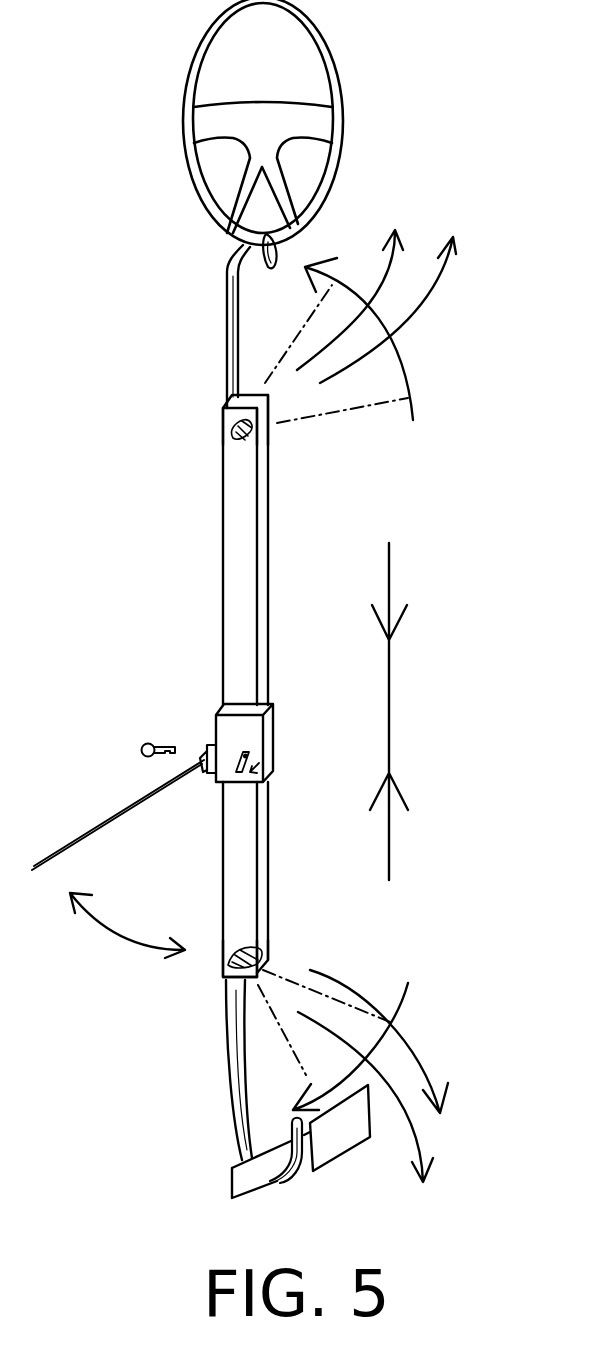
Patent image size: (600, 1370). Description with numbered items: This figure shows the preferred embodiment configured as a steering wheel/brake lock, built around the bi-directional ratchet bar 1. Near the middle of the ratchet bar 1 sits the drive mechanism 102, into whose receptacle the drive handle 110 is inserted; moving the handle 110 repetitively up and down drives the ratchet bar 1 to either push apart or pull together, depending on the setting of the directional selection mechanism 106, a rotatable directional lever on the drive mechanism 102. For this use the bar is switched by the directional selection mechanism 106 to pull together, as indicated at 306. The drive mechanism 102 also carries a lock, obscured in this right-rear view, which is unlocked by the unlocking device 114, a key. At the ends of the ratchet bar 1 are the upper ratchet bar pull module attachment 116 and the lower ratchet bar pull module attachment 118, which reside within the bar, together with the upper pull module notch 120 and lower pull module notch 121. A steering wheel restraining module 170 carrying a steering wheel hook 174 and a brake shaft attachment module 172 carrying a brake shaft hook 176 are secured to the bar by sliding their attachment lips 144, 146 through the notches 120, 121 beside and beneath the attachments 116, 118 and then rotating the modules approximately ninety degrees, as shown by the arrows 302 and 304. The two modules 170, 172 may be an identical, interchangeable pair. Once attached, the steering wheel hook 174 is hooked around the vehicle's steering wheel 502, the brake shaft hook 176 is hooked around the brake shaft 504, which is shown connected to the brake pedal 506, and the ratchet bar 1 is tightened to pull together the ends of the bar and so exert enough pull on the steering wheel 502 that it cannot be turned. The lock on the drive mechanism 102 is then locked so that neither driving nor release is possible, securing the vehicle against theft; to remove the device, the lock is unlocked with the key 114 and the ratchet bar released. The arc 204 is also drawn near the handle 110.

The ratchet bar 1 is at (188, 638).
The drive mechanism 102 is at (253, 733).
The directional selection mechanism 106 is at (247, 756).
The drive handle 110 is at (117, 818).
The unlocking device 114 is at (148, 743).
The upper ratchet bar pull module attachment 116 is at (222, 415).
The lower ratchet bar pull module attachment 118 is at (227, 943).
The upper pull module notch 120 is at (272, 407).
The lower pull module notch 121 is at (260, 968).
The upper attachment lip 144 is at (248, 440).
The lower attachment lip 146 is at (260, 947).
The steering wheel restraining module 170 is at (177, 293).
The brake shaft attachment module 172 is at (183, 1090).
The steering wheel hook 174 is at (278, 257).
The brake shaft hook 176 is at (283, 1183).
The cable pivot direction 204 is at (113, 930).
The rotation arrow 302 is at (412, 383).
The rotation arrow 304 is at (408, 992).
The pull together direction 306 is at (390, 718).
The steering wheel 502 is at (297, 130).
The brake shaft 504 is at (248, 1180).
The brake pedal 506 is at (342, 1132).